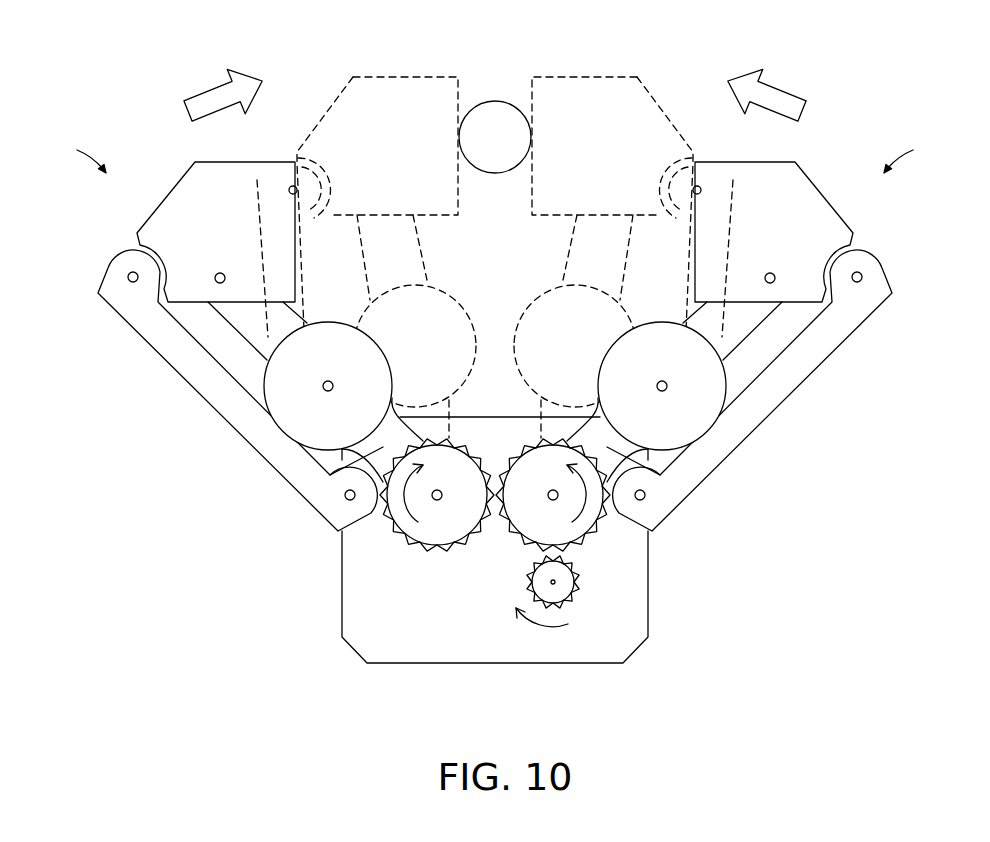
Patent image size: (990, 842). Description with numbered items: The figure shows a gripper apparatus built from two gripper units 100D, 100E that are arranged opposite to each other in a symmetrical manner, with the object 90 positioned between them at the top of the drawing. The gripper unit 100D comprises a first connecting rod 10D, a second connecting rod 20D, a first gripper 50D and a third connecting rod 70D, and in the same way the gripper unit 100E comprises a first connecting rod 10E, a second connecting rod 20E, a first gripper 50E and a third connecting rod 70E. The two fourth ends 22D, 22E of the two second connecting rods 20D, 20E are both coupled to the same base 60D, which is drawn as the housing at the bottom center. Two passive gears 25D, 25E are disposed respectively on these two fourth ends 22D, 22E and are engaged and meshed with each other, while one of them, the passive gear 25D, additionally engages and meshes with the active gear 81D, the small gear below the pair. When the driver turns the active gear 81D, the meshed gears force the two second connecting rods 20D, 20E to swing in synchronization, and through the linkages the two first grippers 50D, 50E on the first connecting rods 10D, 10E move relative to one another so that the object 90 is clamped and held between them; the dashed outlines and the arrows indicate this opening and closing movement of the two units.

The first connecting rod 10E is at (253, 325).
The first connecting rod 10D is at (704, 348).
The second connecting rod 20E is at (312, 497).
The second connecting rod 20D is at (681, 525).
The fourth end 22E is at (432, 530).
The fourth end 22D is at (503, 565).
The passive gear 25E is at (402, 547).
The passive gear 25D is at (664, 526).
The first gripper 50E is at (187, 193).
The first gripper 50D is at (694, 207).
The base 60D is at (640, 628).
The third connecting rod 70E is at (223, 402).
The third connecting rod 70D is at (752, 390).
The active gear 81D is at (573, 605).
The object 90 is at (497, 113).
The gripper unit 100E is at (59, 153).
The gripper unit 100D is at (931, 153).